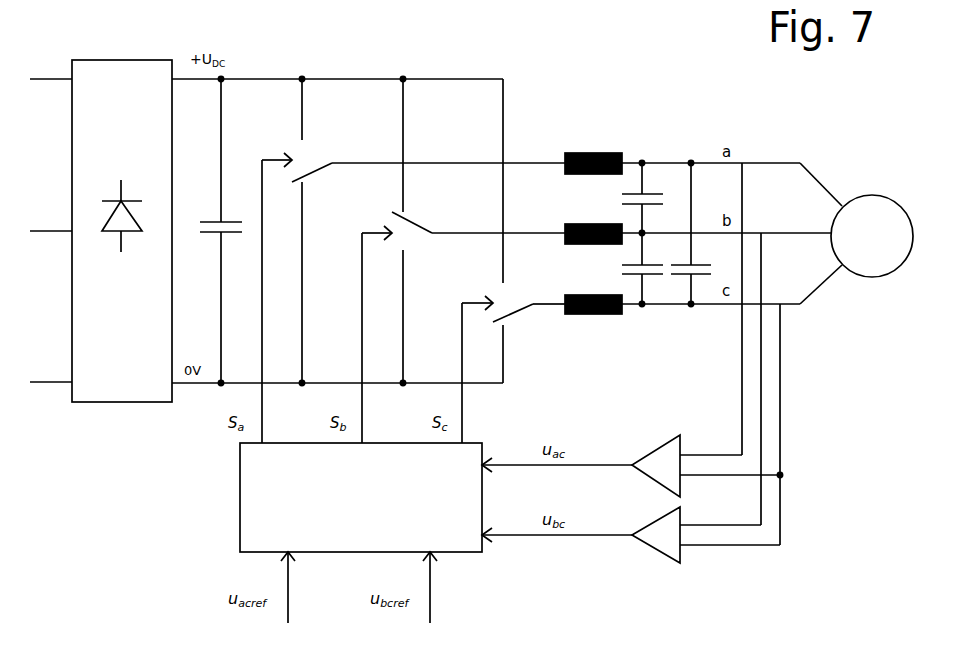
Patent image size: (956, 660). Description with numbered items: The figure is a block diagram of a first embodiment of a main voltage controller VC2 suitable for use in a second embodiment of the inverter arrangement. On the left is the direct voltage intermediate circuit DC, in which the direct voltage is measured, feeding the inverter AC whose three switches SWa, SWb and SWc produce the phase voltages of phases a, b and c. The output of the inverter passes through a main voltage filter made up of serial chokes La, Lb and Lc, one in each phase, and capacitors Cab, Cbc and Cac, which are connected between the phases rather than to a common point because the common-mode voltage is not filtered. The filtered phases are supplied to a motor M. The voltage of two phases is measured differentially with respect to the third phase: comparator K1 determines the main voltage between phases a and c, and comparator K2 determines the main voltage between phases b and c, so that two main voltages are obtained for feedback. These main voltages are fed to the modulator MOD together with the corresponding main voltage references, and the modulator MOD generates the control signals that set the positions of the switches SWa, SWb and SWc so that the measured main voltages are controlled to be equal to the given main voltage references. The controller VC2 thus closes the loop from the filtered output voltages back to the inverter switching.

The direct voltage intermediate circuit DC is at (262, 70).
The inverter AC is at (433, 70).
The switch SWa is at (312, 160).
The switch SWb is at (415, 218).
The switch SWc is at (517, 318).
The serial choke La is at (577, 152).
The serial choke Lb is at (577, 223).
The serial choke Lc is at (577, 294).
The capacitor Cab is at (652, 192).
The capacitor Cbc is at (656, 280).
The capacitor Cac is at (707, 280).
The motor M is at (872, 236).
The comparator K1 is at (655, 445).
The comparator K2 is at (655, 515).
The modulator MOD is at (237, 491).
The voltage controller VC2 is at (570, 563).